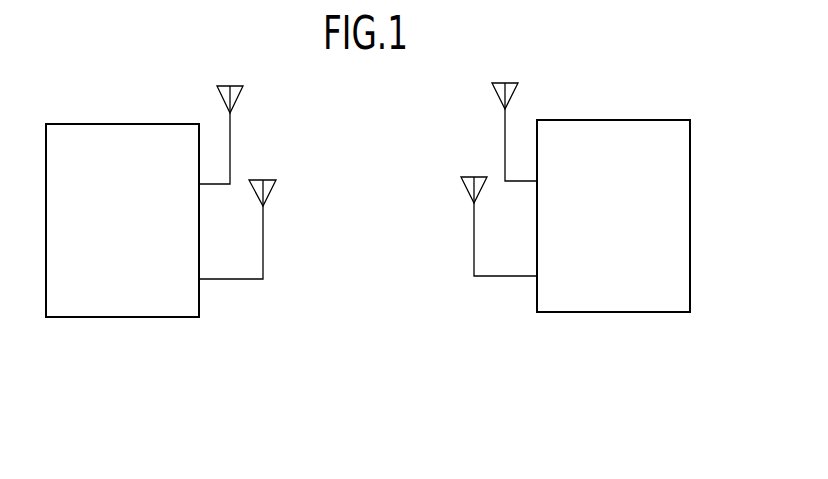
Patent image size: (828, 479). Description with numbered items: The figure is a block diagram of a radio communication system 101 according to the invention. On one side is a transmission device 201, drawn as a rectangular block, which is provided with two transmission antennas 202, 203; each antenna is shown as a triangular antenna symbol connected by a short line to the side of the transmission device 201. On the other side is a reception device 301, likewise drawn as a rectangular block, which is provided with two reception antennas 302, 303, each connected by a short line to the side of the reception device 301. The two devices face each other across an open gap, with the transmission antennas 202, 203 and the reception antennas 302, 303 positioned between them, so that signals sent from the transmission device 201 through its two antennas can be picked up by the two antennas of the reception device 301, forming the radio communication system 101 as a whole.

The radio communication system 101 is at (377, 360).
The transmission device 201 is at (123, 317).
The transmission antenna 202 is at (232, 141).
The transmission antenna 203 is at (265, 236).
The reception device 301 is at (613, 312).
The reception antenna 302 is at (503, 132).
The reception antenna 303 is at (472, 238).